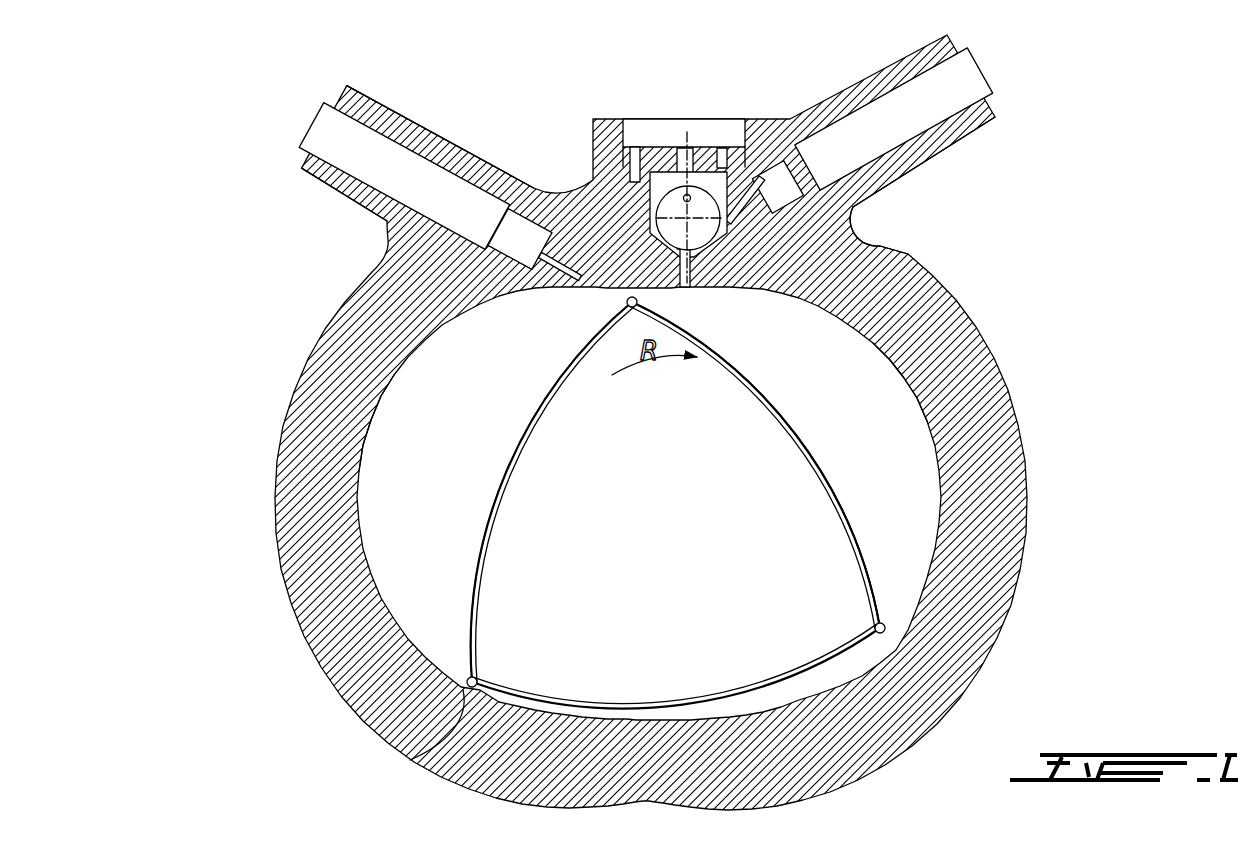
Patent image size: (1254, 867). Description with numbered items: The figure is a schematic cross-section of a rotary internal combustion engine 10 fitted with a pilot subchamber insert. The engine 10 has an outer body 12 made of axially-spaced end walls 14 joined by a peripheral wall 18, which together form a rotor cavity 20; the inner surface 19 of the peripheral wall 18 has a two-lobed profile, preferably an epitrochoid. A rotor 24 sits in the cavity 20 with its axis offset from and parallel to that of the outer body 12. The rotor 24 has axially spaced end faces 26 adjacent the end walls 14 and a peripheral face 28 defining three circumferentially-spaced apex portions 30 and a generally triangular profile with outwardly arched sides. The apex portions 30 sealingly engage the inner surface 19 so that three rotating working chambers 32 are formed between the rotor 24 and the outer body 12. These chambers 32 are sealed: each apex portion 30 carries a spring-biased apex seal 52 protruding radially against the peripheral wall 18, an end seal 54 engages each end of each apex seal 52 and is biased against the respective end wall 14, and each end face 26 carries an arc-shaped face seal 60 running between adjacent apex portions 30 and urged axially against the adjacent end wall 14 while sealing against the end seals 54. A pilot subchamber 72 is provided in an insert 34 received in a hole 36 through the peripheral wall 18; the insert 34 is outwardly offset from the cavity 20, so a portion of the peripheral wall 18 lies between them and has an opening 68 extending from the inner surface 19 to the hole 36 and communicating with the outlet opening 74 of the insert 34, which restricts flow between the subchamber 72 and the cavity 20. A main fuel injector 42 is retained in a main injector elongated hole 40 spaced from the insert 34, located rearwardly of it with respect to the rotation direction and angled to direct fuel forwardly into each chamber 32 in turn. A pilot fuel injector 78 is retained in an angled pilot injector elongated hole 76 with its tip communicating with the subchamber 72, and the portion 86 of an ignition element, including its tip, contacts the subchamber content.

The engine 10 is at (175, 252).
The outer body 12 is at (1032, 474).
The end walls 14 is at (873, 434).
The peripheral wall 18 is at (320, 490).
The inner surface 19 is at (395, 387).
The rotor cavity 20 is at (900, 518).
The rotor 24 is at (881, 557).
The end faces 26 is at (812, 610).
The peripheral face 28 is at (470, 572).
The apex portions 30 is at (898, 638).
The working chambers 32 is at (437, 446).
The insert 34 is at (638, 143).
The hole 36 is at (716, 162).
The main injector elongated hole 40 is at (352, 126).
The main fuel injector 42 is at (418, 172).
The apex seal 52 is at (465, 688).
The end seal 54 is at (410, 760).
The face seal 60 is at (760, 390).
The opening 68 is at (880, 255).
The pilot subchamber 72 is at (680, 208).
The outlet opening 74 is at (855, 209).
The pilot injector elongated hole 76 is at (845, 128).
The pilot fuel injector 78 is at (910, 92).
The portion of the ignition element 86 is at (647, 226).